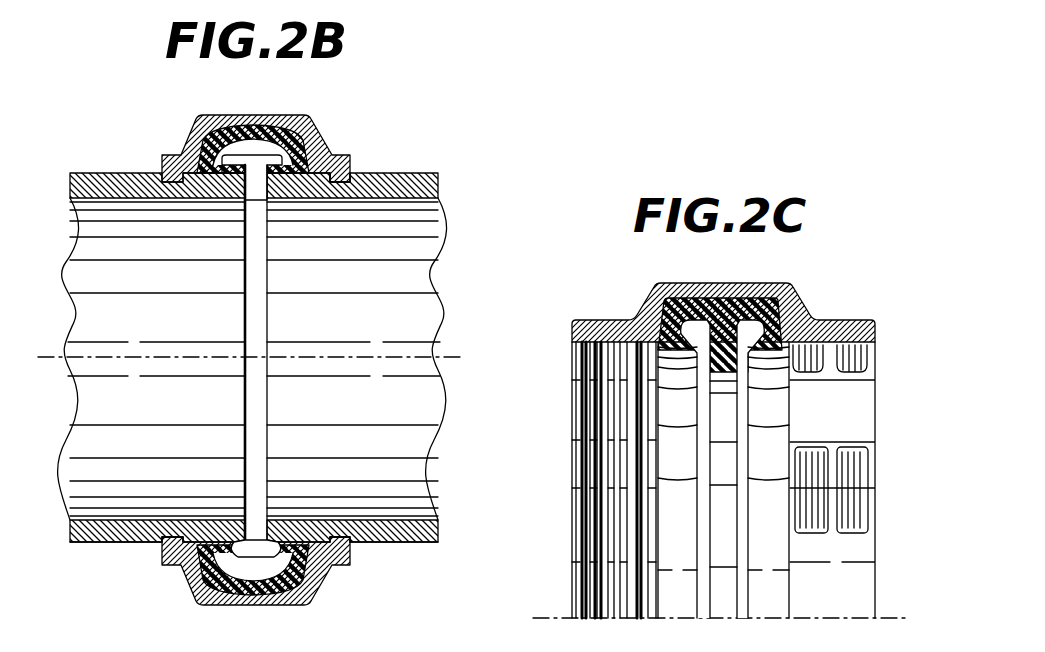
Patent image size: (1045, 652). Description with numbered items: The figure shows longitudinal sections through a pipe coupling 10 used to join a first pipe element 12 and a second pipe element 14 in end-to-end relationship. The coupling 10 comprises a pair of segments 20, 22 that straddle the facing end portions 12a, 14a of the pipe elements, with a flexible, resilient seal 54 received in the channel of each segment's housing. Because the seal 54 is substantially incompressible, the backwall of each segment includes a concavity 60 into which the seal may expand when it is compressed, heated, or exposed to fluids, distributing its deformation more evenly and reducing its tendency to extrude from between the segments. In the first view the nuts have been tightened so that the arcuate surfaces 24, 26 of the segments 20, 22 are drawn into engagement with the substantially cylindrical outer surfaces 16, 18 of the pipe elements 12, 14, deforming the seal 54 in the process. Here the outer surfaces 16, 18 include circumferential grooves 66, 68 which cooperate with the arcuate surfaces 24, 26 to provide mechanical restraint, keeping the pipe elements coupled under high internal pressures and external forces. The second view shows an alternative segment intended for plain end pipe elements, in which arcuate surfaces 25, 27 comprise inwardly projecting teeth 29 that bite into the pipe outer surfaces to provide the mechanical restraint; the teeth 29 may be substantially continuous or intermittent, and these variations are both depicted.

In FIG. 2B, the pipe coupling 10 is at (305, 126).
In FIG. 2B, the pipe element 12 is at (117, 543).
In FIG. 2B, the end portion of pipe element 12a is at (197, 518).
In FIG. 2B, the pipe element 14 is at (398, 543).
In FIG. 2B, the end portion of pipe element 14a is at (297, 518).
In FIG. 2B, the outer surface 16 is at (146, 543).
In FIG. 2B, the outer surface 18 is at (352, 543).
In FIG. 2B, the segment 20 is at (333, 138).
In FIG. 2C, the segment 20 is at (796, 314).
In FIG. 2B, the segment 22 is at (327, 582).
In FIG. 2B, the arcuate surface 24 is at (352, 172).
In FIG. 2C, the arcuate surface 25 is at (582, 397).
In FIG. 2B, the arcuate surface 26 is at (352, 519).
In FIG. 2C, the arcuate surface 27 is at (863, 468).
In FIG. 2C, the teeth 29 is at (582, 443).
In FIG. 2B, the seal 54 is at (192, 128).
In FIG. 2B, the concavity 60 is at (255, 113).
In FIG. 2B, the circumferential groove 66 is at (175, 538).
In FIG. 2B, the circumferential groove 68 is at (333, 178).